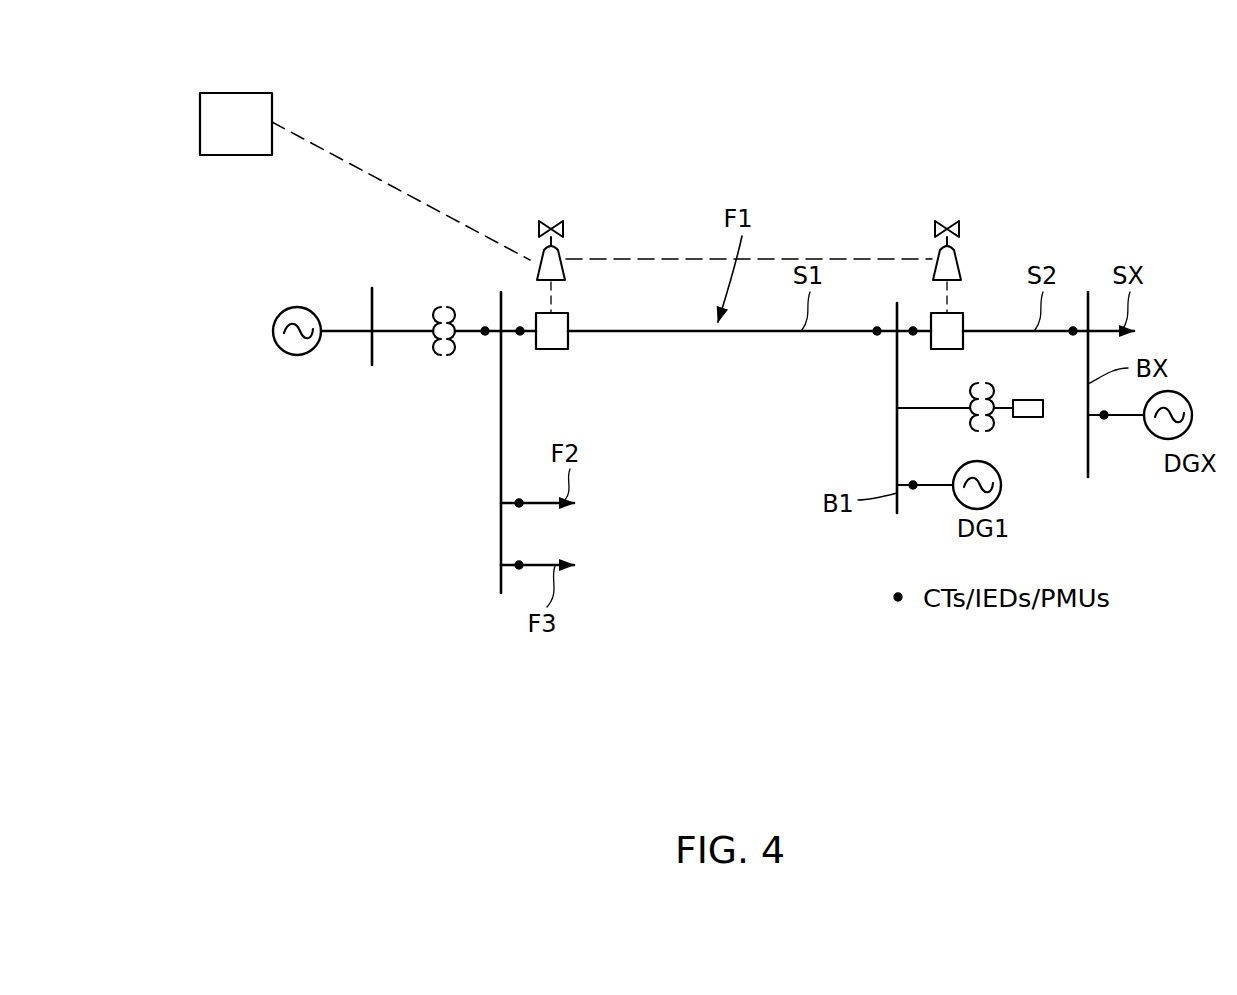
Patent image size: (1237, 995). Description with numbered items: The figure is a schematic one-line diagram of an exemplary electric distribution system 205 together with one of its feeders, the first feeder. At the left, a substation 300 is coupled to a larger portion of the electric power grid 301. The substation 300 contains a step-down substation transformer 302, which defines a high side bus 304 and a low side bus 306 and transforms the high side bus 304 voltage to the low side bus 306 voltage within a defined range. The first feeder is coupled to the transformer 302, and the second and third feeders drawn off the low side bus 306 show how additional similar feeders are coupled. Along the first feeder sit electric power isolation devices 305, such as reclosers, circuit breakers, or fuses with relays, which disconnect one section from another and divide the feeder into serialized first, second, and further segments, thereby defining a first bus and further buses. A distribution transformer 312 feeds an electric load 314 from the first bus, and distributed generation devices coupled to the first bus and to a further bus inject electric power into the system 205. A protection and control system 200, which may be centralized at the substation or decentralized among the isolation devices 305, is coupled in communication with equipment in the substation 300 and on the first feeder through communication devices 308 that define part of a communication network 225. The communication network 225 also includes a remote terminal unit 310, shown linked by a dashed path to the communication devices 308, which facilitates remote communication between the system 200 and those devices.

The protection and control system 200 is at (578, 340).
The electric distribution system 205 is at (848, 238).
The communication network 225 is at (368, 172).
The substation 300 is at (395, 278).
The electric power grid 301 is at (271, 327).
The step-down substation transformer 302 is at (437, 305).
The high side bus 304 is at (393, 334).
The electric power isolation device 305 is at (568, 320).
The low side bus 306 is at (463, 330).
The communication device 308 is at (563, 258).
The remote terminal unit 310 is at (215, 140).
The distribution transformer 312 is at (994, 386).
The electric load 314 is at (1027, 418).